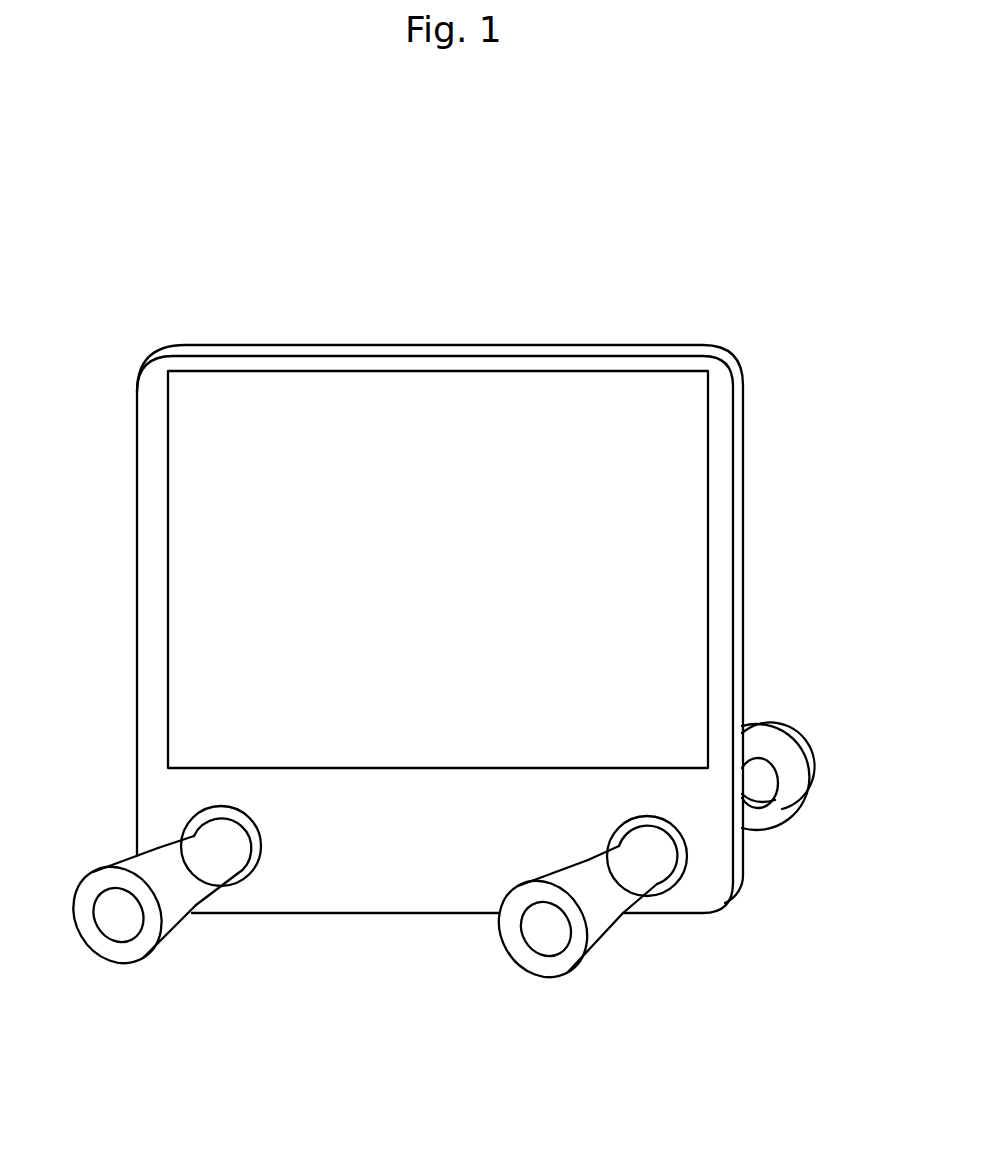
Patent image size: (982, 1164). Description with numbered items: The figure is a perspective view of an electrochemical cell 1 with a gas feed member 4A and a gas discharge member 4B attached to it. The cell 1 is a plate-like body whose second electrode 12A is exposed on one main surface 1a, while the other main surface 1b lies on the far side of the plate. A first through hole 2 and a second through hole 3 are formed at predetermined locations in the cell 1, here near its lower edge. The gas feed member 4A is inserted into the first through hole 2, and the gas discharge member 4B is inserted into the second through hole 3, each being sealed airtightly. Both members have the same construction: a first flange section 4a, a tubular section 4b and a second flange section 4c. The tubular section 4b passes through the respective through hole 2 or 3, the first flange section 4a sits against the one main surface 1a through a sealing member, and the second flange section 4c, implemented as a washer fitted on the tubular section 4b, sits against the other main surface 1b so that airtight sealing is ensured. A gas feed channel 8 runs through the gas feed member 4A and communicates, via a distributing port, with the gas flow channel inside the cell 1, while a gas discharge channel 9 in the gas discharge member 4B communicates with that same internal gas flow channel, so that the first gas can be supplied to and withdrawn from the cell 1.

The electrochemical cell 1 is at (736, 349).
The one main surface 1a is at (435, 366).
The other main surface 1b is at (505, 349).
The second electrode 12A is at (572, 385).
The first through hole 2 is at (630, 820).
The second through hole 3 is at (211, 813).
The gas feed member 4A is at (539, 862).
The gas discharge member 4B is at (116, 838).
The first flange section 4a is at (180, 923).
The tubular section 4b is at (223, 868).
The second flange section 4c is at (780, 743).
The gas feed channel 8 is at (532, 923).
The gas discharge channel 9 is at (108, 908).